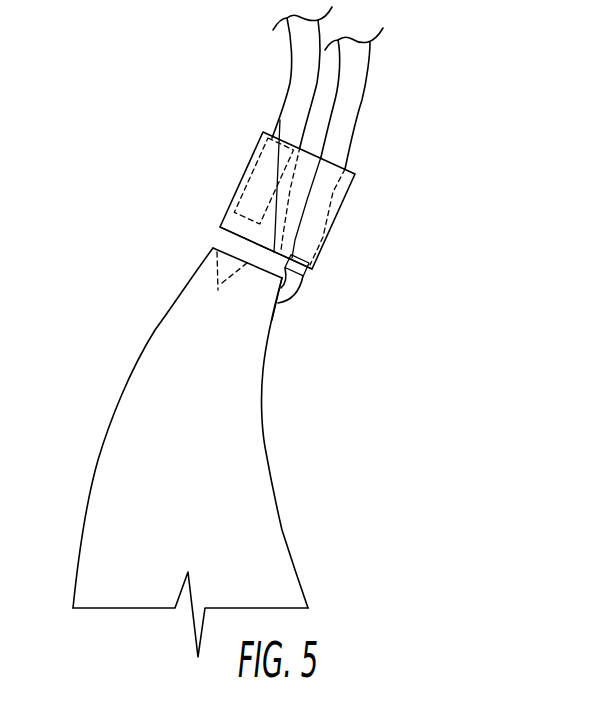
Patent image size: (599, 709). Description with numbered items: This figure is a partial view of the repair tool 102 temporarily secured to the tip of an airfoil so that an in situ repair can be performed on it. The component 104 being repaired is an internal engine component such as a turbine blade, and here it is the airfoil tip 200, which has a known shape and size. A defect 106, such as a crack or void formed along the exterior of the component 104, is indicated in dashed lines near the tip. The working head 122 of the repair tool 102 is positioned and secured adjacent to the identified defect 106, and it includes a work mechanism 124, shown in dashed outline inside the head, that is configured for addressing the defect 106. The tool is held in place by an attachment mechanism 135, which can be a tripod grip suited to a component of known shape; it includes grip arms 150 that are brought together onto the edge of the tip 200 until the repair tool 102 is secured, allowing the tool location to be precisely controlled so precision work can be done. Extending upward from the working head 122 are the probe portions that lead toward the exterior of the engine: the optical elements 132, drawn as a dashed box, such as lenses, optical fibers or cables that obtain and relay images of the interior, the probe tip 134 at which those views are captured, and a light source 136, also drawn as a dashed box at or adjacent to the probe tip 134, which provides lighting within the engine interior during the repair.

The repair tool 102 is at (222, 81).
The airfoil tip 200 is at (177, 240).
The component 104 is at (92, 477).
The defect 106 is at (225, 286).
The working head 122 is at (250, 158).
The work mechanism 124 is at (235, 193).
The optical elements 132 is at (333, 192).
The probe tip 134 is at (330, 228).
The attachment mechanism 135 is at (325, 285).
The light source 136 is at (315, 260).
The grip arms 150 is at (298, 293).